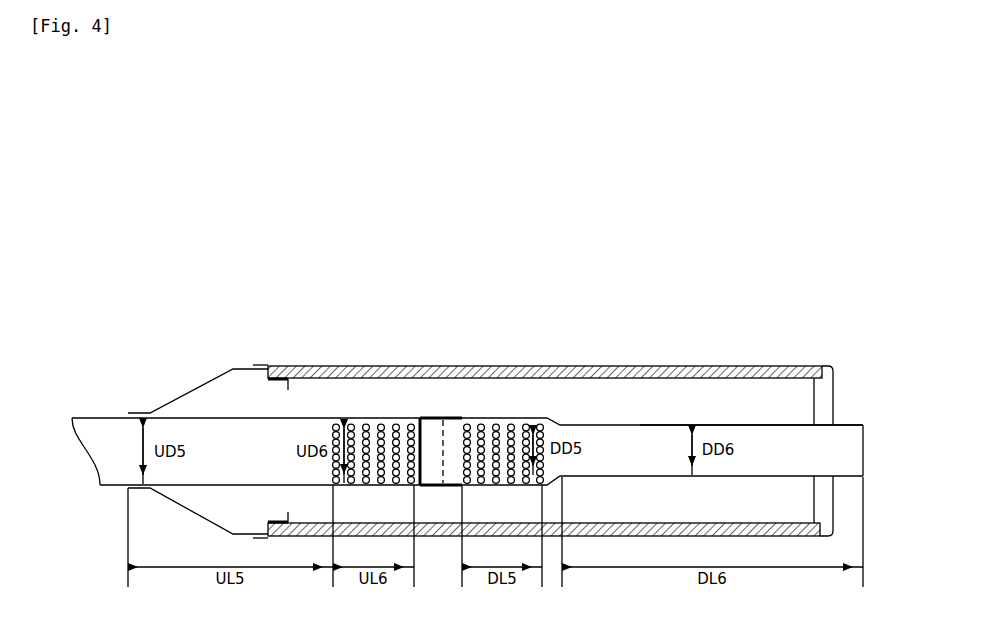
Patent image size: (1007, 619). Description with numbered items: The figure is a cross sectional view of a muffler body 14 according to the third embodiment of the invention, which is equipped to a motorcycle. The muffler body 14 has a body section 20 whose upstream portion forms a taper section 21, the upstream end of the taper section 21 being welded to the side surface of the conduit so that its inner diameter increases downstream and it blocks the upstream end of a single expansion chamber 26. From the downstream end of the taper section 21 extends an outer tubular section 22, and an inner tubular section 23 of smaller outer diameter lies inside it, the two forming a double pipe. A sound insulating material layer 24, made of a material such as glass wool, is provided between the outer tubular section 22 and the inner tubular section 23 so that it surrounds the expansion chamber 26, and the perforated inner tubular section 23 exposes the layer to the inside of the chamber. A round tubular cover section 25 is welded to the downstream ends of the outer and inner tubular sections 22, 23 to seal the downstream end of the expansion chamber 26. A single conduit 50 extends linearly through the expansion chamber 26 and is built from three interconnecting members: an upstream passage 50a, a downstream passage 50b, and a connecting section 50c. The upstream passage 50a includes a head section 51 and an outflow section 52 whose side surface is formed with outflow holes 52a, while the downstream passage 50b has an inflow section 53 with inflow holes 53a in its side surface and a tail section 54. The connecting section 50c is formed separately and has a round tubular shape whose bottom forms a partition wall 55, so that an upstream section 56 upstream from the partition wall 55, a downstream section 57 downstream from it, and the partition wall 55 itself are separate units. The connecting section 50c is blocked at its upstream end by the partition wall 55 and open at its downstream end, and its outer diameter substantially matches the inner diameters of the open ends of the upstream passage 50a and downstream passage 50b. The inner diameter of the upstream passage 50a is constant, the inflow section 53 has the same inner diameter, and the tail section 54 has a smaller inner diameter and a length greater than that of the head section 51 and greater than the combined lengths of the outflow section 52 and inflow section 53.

The muffler body 14 is at (399, 167).
The body section 20 is at (95, 238).
The taper section 21 is at (185, 392).
The outer tubular section 22 is at (290, 366).
The inner tubular section 23 is at (307, 366).
The sound insulating material layer 24 is at (320, 366).
The round tubular cover section 25 is at (833, 393).
The expansion chamber 26 is at (740, 407).
The conduit 50 is at (608, 233).
The upstream passage 50a is at (110, 416).
The downstream passage 50b is at (663, 422).
The connecting section 50c is at (447, 416).
The head section 51 is at (288, 418).
The outflow section 52 is at (380, 418).
The outflow holes 52a is at (365, 418).
The inflow section 53 is at (482, 418).
The inflow holes 53a is at (510, 418).
The tail section 54 is at (627, 425).
The partition wall 55 is at (433, 452).
The upstream section 56 is at (413, 270).
The downstream section 57 is at (513, 270).